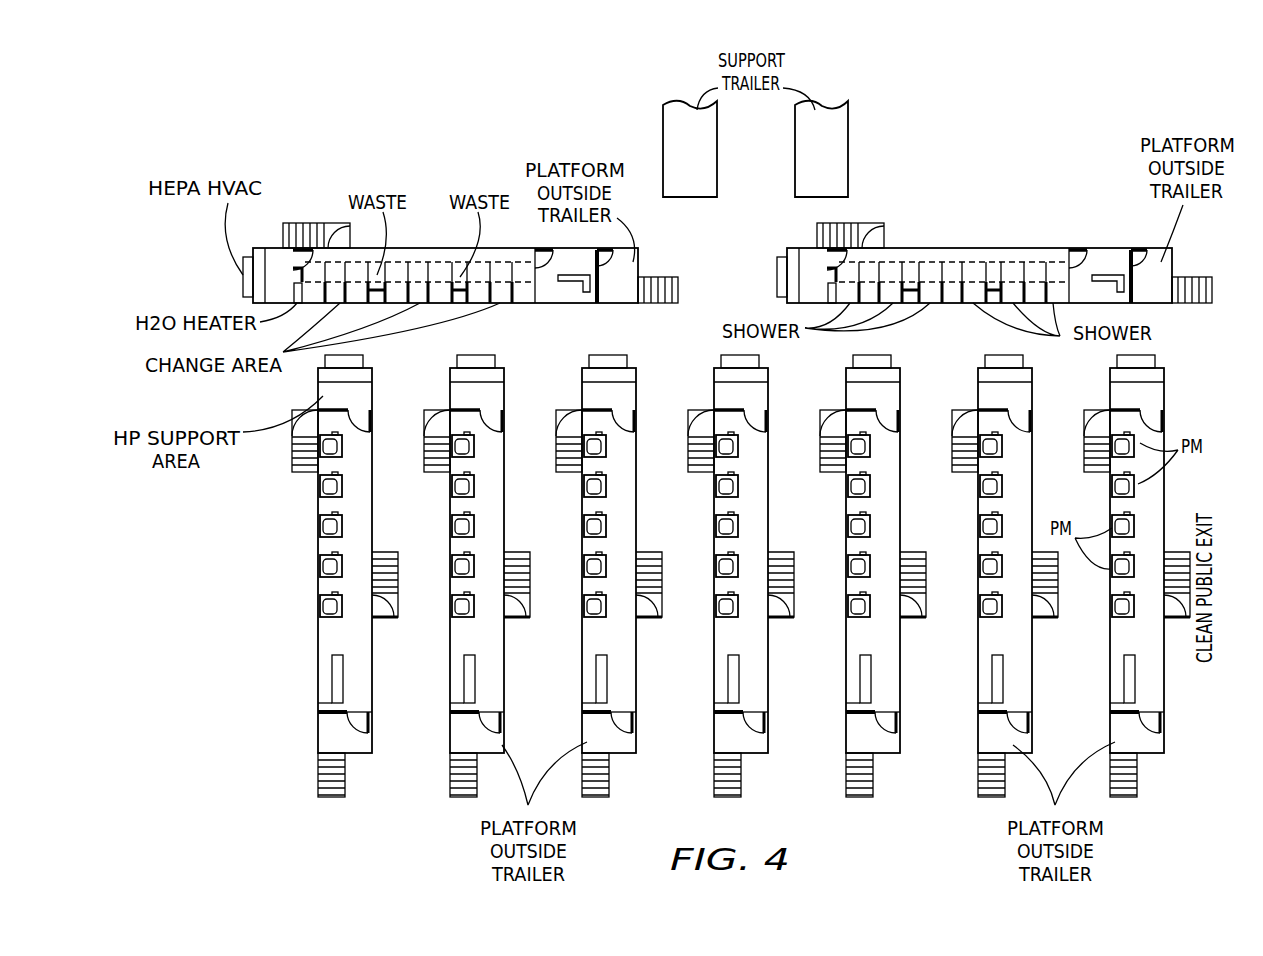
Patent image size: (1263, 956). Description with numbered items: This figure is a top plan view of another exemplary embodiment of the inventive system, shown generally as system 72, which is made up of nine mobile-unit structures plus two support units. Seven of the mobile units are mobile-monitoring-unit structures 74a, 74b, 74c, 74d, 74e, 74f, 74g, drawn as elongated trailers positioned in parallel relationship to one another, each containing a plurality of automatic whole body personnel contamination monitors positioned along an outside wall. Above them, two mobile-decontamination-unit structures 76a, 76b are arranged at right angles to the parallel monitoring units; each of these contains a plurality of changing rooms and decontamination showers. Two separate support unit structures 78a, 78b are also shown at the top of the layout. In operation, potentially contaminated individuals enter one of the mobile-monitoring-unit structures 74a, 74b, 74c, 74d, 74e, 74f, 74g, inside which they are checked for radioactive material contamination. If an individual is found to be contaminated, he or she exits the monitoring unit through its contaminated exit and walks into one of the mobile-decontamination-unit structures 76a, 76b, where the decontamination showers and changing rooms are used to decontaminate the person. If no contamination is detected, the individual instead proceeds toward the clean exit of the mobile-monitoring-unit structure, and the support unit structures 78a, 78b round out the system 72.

The system 72 is at (338, 183).
The mobile-monitoring-unit structure 74a is at (314, 657).
The mobile-monitoring-unit structure 74b is at (446, 657).
The mobile-monitoring-unit structure 74c is at (578, 657).
The mobile-monitoring-unit structure 74d is at (710, 657).
The mobile-monitoring-unit structure 74e is at (842, 657).
The mobile-monitoring-unit structure 74f is at (974, 657).
The mobile-monitoring-unit structure 74g is at (1106, 657).
The mobile-decontamination-unit structure 76a is at (410, 245).
The mobile-decontamination-unit structure 76b is at (946, 245).
The support unit structure 78a is at (660, 131).
The support unit structure 78b is at (852, 158).